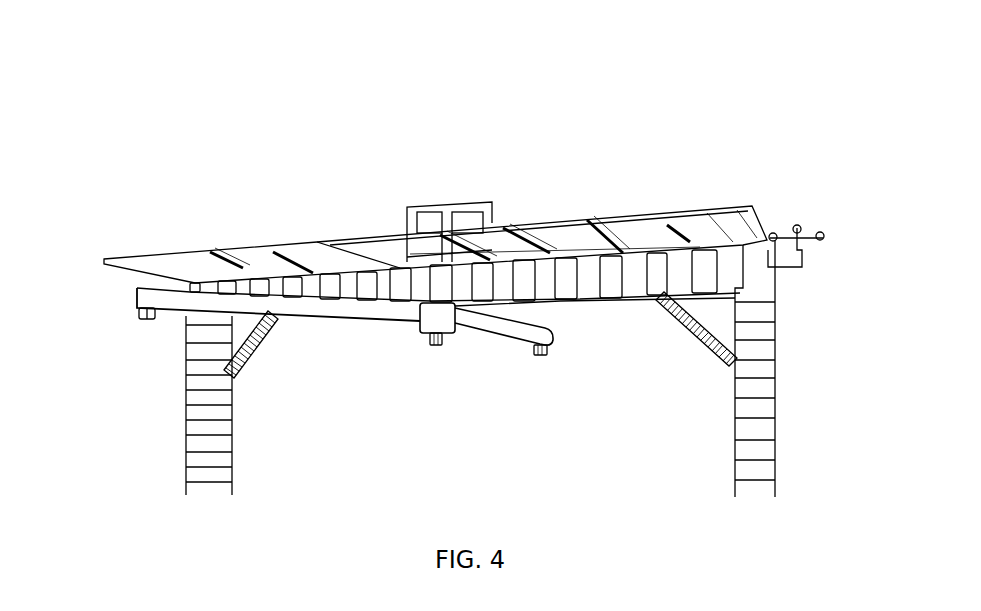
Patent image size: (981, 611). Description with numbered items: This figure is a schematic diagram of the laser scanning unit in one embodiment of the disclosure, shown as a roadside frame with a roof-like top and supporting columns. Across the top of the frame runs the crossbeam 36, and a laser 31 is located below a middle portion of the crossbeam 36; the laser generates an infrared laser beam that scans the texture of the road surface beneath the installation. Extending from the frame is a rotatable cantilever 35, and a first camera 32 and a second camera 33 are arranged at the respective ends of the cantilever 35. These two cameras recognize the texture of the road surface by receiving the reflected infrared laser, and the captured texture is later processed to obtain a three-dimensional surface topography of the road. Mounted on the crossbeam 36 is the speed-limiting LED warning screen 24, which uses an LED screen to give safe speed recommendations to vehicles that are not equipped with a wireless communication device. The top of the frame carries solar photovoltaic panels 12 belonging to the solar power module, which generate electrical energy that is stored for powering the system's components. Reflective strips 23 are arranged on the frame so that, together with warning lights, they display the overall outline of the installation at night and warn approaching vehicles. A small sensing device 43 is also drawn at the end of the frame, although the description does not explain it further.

The solar photovoltaic panels 12 is at (578, 222).
The speed-limiting LED warning screen 24 is at (407, 205).
The anemometer / sensor device 43 is at (802, 256).
The cantilever 35 is at (343, 320).
The first camera 32 is at (139, 320).
The laser 31 is at (435, 347).
The second camera 33 is at (543, 355).
The crossbeam 36 is at (586, 280).
The reflective strips 23 is at (185, 432).